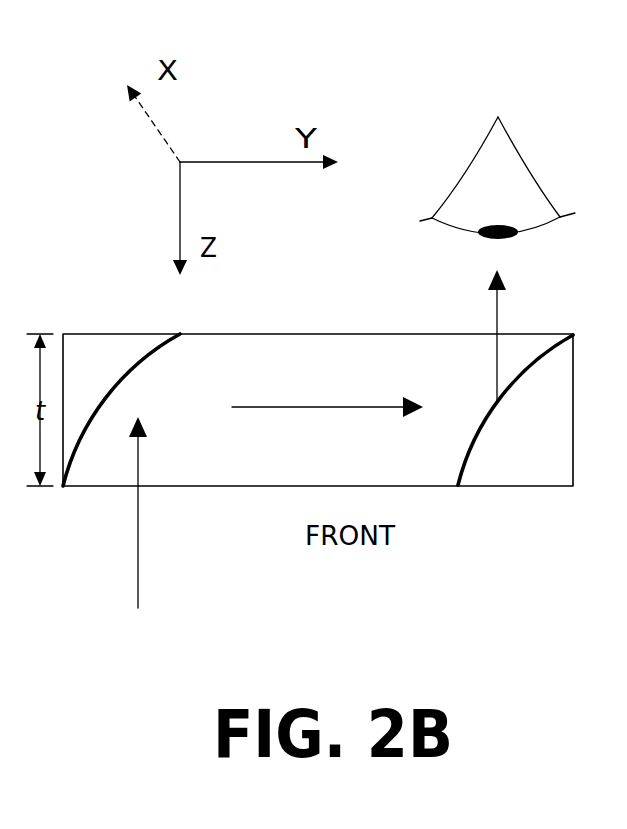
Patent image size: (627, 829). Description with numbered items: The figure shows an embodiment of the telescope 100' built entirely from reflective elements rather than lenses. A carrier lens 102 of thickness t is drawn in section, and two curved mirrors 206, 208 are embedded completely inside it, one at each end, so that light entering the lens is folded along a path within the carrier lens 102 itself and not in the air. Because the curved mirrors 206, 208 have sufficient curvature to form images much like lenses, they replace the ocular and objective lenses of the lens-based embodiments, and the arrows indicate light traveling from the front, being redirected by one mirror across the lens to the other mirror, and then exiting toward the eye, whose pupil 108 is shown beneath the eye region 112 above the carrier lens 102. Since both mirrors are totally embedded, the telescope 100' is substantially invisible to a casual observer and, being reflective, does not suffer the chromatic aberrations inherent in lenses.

The telescope 100' is at (318, 320).
The carrier lens 102 is at (330, 333).
The pupil 108 is at (486, 242).
The light-concentrating lens / reflector cavity 112 is at (522, 211).
The curved mirror 206 is at (104, 404).
The curved mirror 208 is at (470, 452).